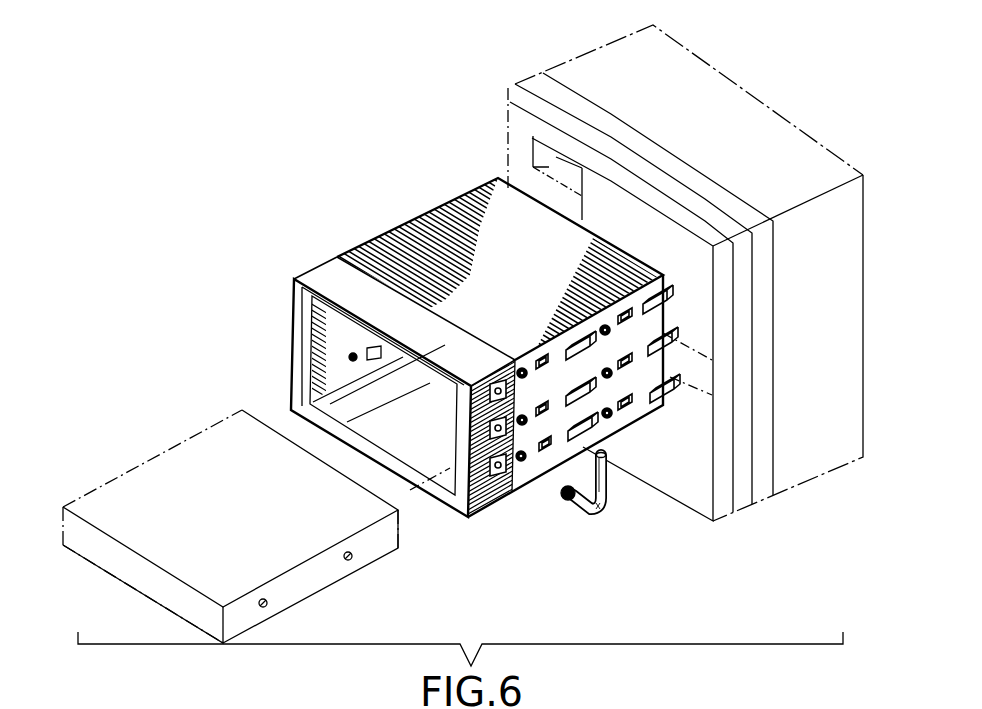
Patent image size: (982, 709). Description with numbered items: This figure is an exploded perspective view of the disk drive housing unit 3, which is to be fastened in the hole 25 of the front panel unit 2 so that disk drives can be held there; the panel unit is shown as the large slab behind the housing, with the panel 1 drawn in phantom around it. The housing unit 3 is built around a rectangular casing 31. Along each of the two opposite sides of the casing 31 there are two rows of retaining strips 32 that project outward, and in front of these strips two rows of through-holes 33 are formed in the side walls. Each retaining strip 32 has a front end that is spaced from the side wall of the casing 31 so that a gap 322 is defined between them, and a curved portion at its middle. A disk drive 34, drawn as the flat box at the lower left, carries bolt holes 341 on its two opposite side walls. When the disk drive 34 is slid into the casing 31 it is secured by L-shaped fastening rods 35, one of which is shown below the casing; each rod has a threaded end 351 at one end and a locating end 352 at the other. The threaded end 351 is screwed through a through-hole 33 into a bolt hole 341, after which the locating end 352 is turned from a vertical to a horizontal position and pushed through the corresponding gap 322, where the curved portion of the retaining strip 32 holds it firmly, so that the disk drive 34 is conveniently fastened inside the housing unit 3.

The panel 1 is at (583, 58).
The front panel unit 2 is at (517, 86).
The hole 25 is at (601, 193).
The disk drive housing unit 3 is at (475, 311).
The rectangular casing 31 is at (356, 262).
The retaining strips 32 is at (553, 447).
The gap 322 is at (496, 431).
The through-holes 33 is at (521, 463).
The disk drive 34 is at (230, 499).
The bolt holes 341 is at (268, 607).
The L-shaped fastening rods 35 is at (622, 520).
The threaded end 351 is at (569, 502).
The locating end 352 is at (608, 486).